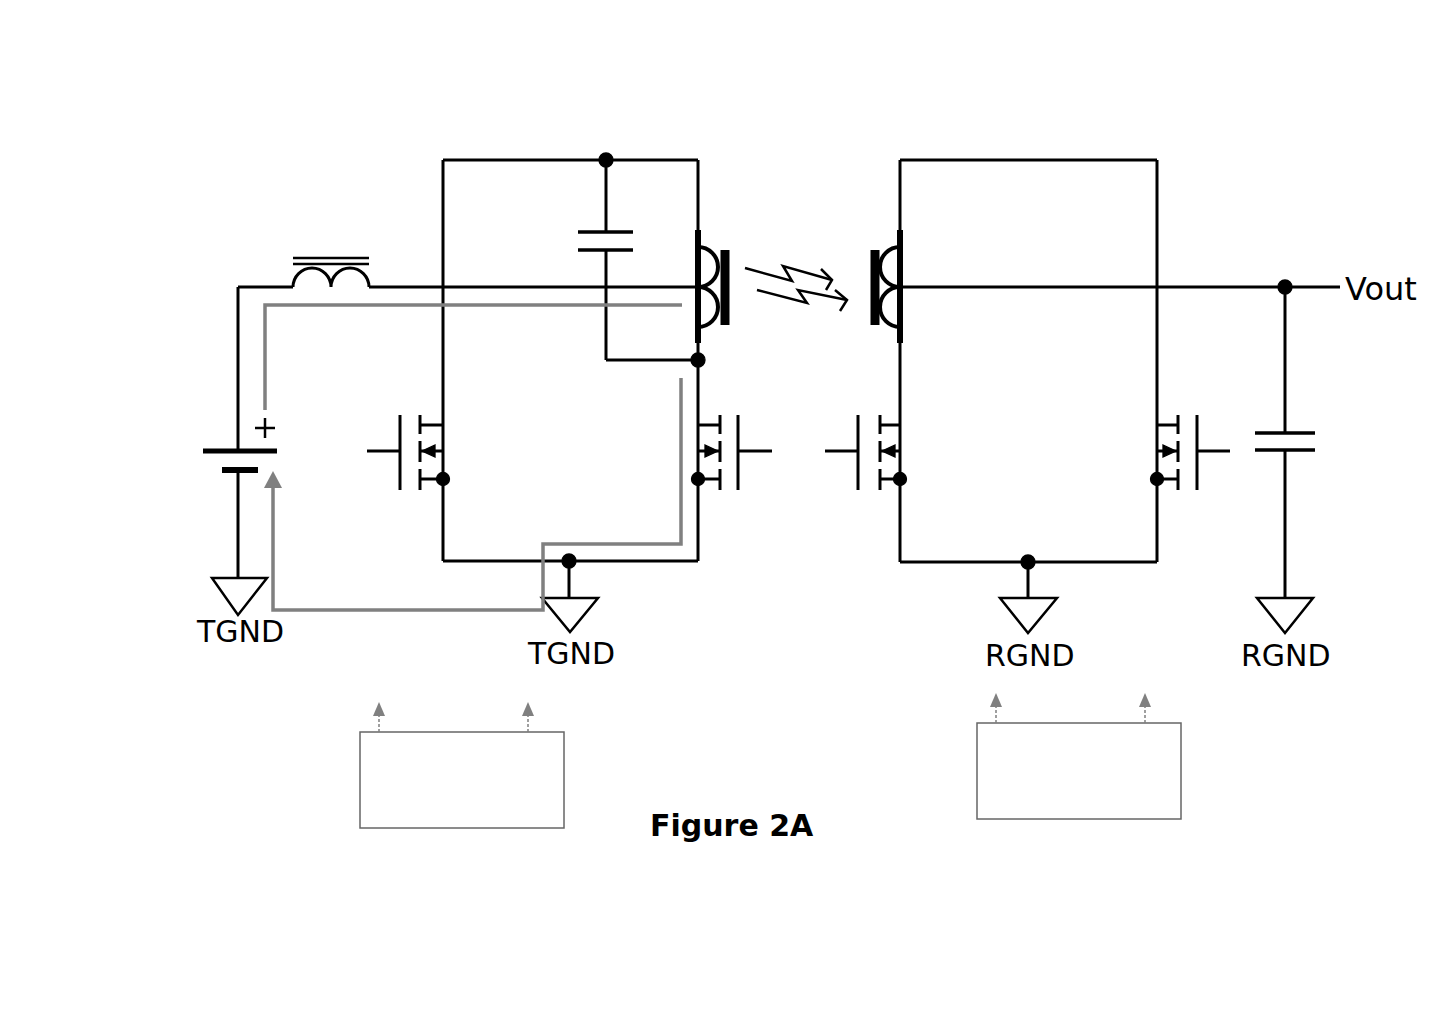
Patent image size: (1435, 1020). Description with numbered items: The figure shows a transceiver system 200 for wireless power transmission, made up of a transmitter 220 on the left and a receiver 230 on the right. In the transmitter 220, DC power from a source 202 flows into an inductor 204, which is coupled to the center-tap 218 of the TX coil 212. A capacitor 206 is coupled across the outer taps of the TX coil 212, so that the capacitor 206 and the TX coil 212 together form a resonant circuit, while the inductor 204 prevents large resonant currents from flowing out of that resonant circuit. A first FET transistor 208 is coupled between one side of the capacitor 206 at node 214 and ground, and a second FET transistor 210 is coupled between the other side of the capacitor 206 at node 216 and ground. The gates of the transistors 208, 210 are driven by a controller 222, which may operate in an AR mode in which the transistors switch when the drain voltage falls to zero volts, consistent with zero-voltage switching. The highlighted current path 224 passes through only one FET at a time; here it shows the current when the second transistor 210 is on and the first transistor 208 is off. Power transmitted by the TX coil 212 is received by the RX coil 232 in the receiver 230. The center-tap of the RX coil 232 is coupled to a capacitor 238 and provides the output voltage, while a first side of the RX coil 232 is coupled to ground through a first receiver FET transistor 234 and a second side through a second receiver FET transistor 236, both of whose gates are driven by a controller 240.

The transceiver system 200 is at (208, 181).
The source 202 is at (235, 443).
The inductor 204 is at (292, 280).
The capacitor 206 is at (573, 232).
The first FET transistor 208 is at (408, 425).
The second FET transistor 210 is at (757, 440).
The TX coil 212 is at (706, 250).
The node 214 is at (608, 158).
The node 216 is at (690, 365).
The center-tap 218 is at (690, 280).
The transmitter 220 is at (418, 197).
The controller 222 is at (462, 751).
The current path 224 is at (343, 618).
The receiver 230 is at (1208, 215).
The RX coil 232 is at (842, 253).
The FET transistor 234 is at (858, 492).
The FET transistor 236 is at (1190, 474).
The capacitor 238 is at (1320, 456).
The controller 240 is at (1079, 742).